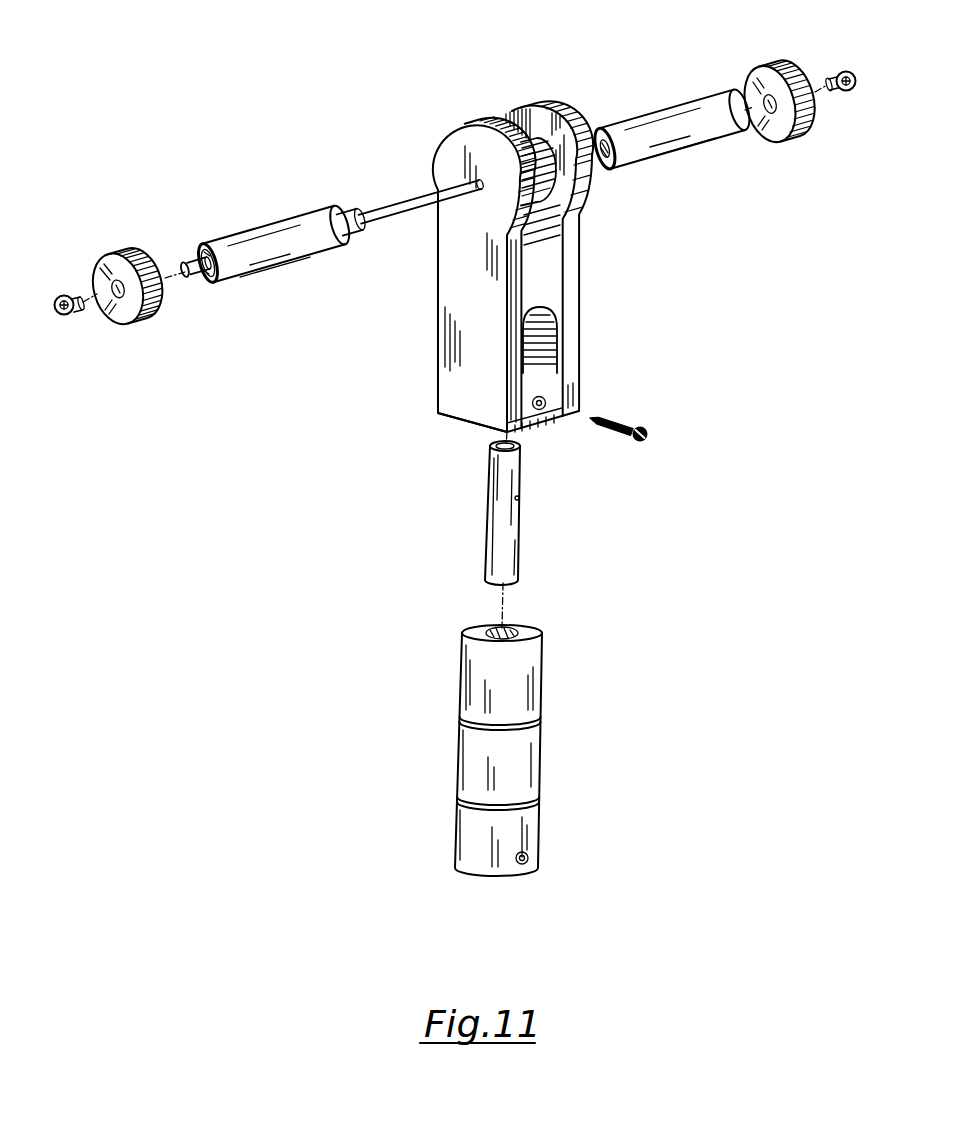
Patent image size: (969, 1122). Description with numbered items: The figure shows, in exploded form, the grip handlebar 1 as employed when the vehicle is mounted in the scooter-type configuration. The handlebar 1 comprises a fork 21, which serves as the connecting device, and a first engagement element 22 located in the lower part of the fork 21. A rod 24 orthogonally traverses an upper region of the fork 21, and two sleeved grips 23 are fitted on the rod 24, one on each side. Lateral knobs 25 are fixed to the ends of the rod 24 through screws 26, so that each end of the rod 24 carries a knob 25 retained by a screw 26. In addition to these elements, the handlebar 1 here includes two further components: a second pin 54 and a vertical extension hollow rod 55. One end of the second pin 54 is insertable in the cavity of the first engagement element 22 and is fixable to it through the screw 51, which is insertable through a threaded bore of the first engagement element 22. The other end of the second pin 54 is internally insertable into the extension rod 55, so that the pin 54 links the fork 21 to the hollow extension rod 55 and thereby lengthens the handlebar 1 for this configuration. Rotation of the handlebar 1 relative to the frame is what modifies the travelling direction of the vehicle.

The grip handlebar 1 is at (300, 410).
The fork 21 is at (467, 279).
The first engagement element 22 is at (553, 372).
The sleeved grips 23 is at (275, 243).
The rod 24 is at (383, 212).
The lateral knobs 25 is at (135, 250).
The screws 26 is at (63, 294).
The screw 51 is at (627, 422).
The second pin 54 is at (522, 504).
The vertical extension hollow rod 55 is at (470, 742).